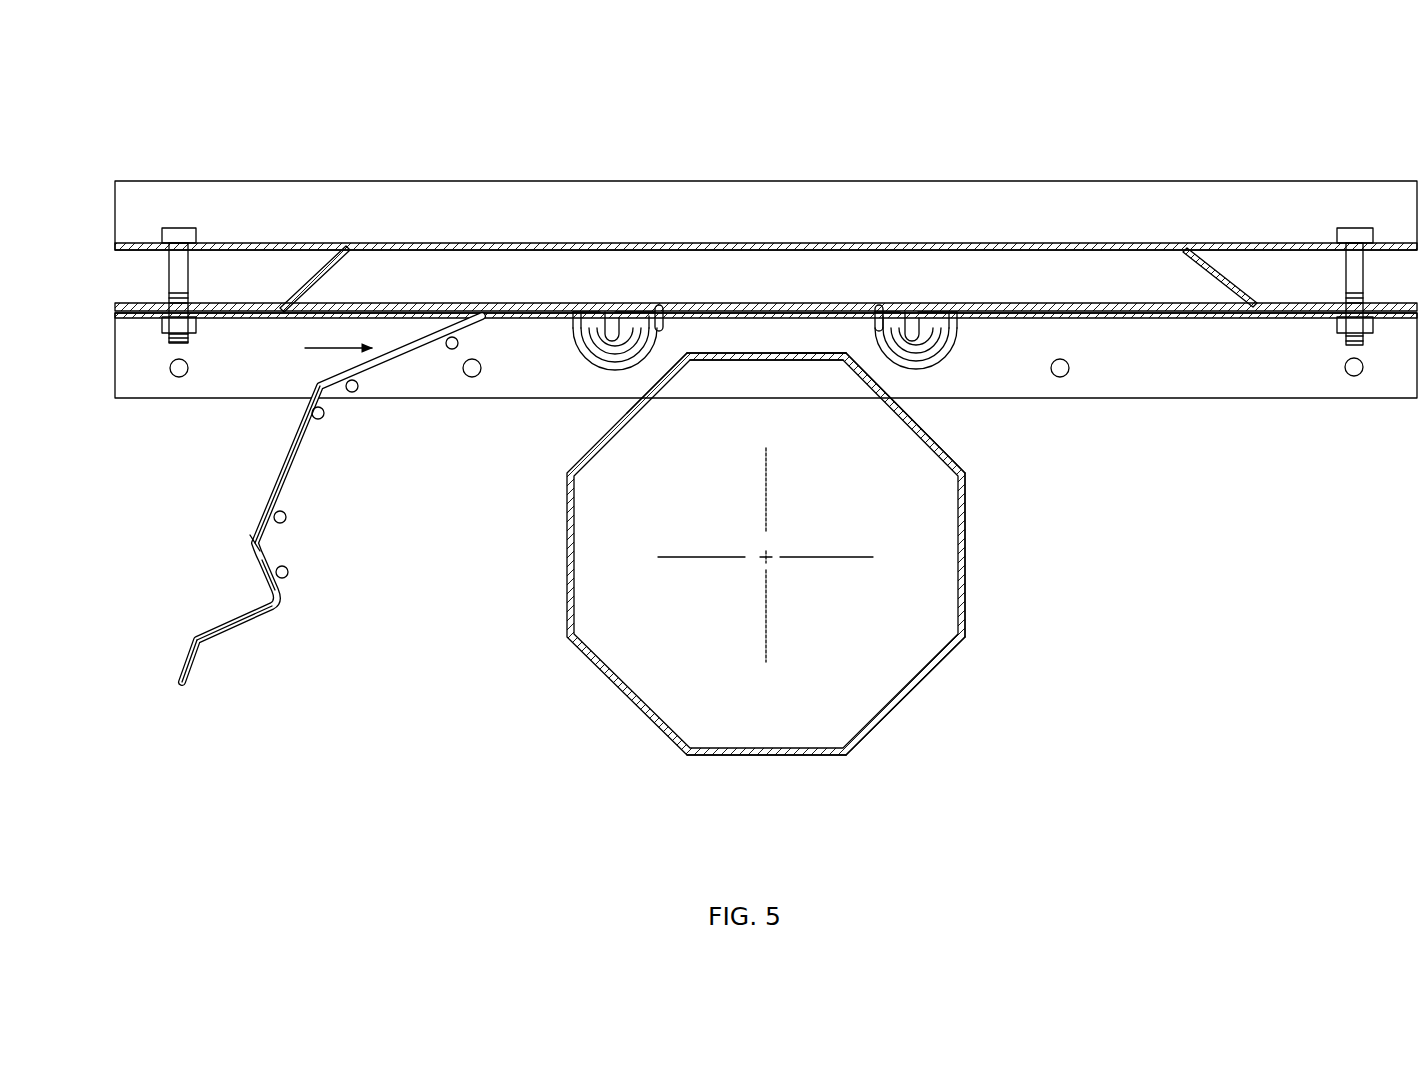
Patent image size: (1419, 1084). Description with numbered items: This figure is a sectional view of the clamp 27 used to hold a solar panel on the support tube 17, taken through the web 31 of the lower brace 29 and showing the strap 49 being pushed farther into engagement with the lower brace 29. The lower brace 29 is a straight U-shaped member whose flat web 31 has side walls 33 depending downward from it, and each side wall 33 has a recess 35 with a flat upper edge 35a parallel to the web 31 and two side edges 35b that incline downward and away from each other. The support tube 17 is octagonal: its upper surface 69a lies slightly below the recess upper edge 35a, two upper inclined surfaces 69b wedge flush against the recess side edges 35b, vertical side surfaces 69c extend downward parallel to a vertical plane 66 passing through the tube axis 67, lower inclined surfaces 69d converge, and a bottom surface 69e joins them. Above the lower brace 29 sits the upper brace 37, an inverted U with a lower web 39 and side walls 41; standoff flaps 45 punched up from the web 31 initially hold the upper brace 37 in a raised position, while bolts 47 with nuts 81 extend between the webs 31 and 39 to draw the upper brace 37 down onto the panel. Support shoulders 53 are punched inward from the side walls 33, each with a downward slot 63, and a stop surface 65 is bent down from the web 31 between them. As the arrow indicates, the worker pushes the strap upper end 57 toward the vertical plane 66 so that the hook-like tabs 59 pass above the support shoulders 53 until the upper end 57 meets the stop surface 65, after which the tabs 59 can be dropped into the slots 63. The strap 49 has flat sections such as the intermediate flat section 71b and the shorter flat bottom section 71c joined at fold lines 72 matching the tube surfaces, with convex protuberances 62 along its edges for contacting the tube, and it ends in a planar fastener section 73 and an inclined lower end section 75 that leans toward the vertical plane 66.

The support tube 17 is at (972, 565).
The clamp 27 is at (1295, 140).
The lower brace 29 is at (173, 422).
The web 31 is at (528, 303).
The side walls 33 is at (152, 380).
The recess 35 is at (773, 357).
The upper edge 35a is at (808, 358).
The side edges 35b is at (665, 390).
The upper brace 37 is at (245, 162).
The web 39 is at (433, 243).
The side walls 41 is at (570, 198).
The standoff flaps 45 is at (308, 277).
The bolts 47 is at (178, 272).
The strap 49 is at (293, 458).
The support shoulders 53 is at (612, 320).
The upper end 57 is at (625, 318).
The tabs 59 is at (645, 365).
The protuberances 62 is at (285, 522).
The slot 63 is at (632, 330).
The stop surface 65 is at (668, 324).
The vertical plane 66 is at (768, 490).
The axis 67 is at (767, 556).
The upper surface 69a is at (720, 360).
The upper inclined surfaces 69b is at (940, 447).
The vertical side surfaces 69c is at (968, 612).
The lower inclined surfaces 69d is at (912, 690).
The bottom surface 69e is at (752, 757).
The intermediate flat section 71b is at (277, 482).
The flat bottom section 71c is at (283, 588).
The fold lines 72 is at (253, 543).
The fastener section 73 is at (245, 630).
The lower end section 75 is at (190, 672).
The nut 81 is at (165, 325).